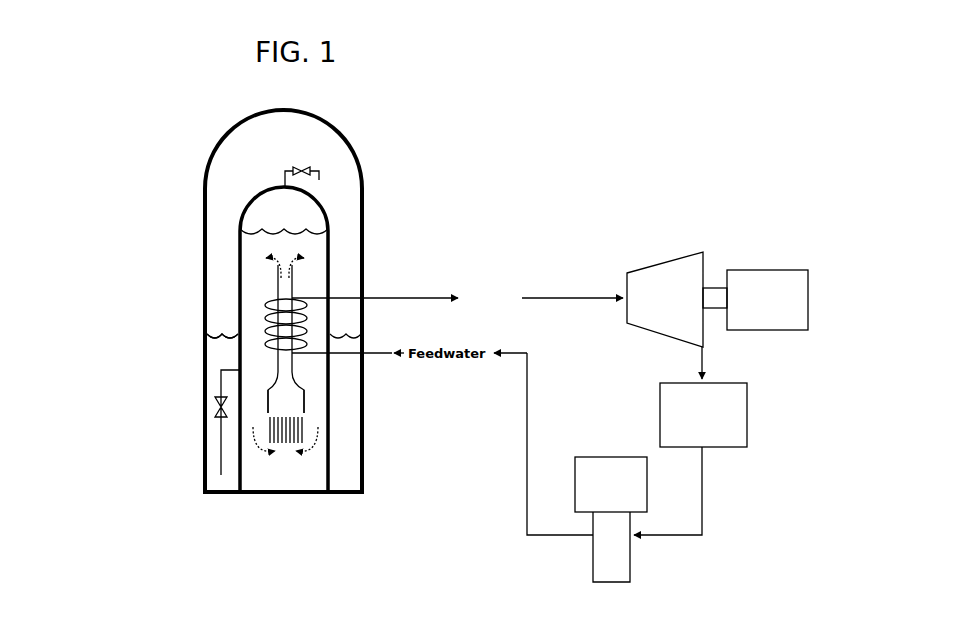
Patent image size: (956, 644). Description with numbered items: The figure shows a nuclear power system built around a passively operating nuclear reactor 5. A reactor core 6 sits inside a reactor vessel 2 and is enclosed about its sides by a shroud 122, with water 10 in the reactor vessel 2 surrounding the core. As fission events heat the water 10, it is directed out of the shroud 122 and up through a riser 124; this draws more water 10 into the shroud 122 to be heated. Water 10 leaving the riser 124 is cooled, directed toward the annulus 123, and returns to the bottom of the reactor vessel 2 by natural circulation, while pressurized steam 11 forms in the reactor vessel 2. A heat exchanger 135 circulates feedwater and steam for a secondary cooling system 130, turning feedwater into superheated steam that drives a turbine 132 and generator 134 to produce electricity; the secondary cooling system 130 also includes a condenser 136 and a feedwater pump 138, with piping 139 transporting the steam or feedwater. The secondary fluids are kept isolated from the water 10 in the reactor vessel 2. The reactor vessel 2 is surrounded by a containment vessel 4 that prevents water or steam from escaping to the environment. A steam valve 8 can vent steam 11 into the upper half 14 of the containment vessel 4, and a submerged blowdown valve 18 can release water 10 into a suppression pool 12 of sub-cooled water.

The reactor vessel 2 is at (338, 245).
The containment vessel 4 is at (370, 198).
The nuclear reactor 5 is at (182, 193).
The reactor core 6 is at (313, 420).
The steam valve 8 is at (303, 164).
The water 10 is at (255, 273).
The pressurized steam 11 is at (277, 210).
The suppression pool 12 is at (348, 463).
The upper half of the containment vessel 14 is at (271, 163).
The submerged blowdown valve 18 is at (213, 405).
The shroud 122 is at (308, 402).
The annulus 123 is at (300, 376).
The riser 124 is at (300, 282).
The secondary cooling system 130 is at (657, 239).
The turbine 132 is at (648, 305).
The generator 134 is at (754, 305).
The heat exchanger 135 is at (255, 318).
The condenser 136 is at (687, 430).
The feedwater pump 138 is at (595, 490).
The piping 139 is at (590, 292).